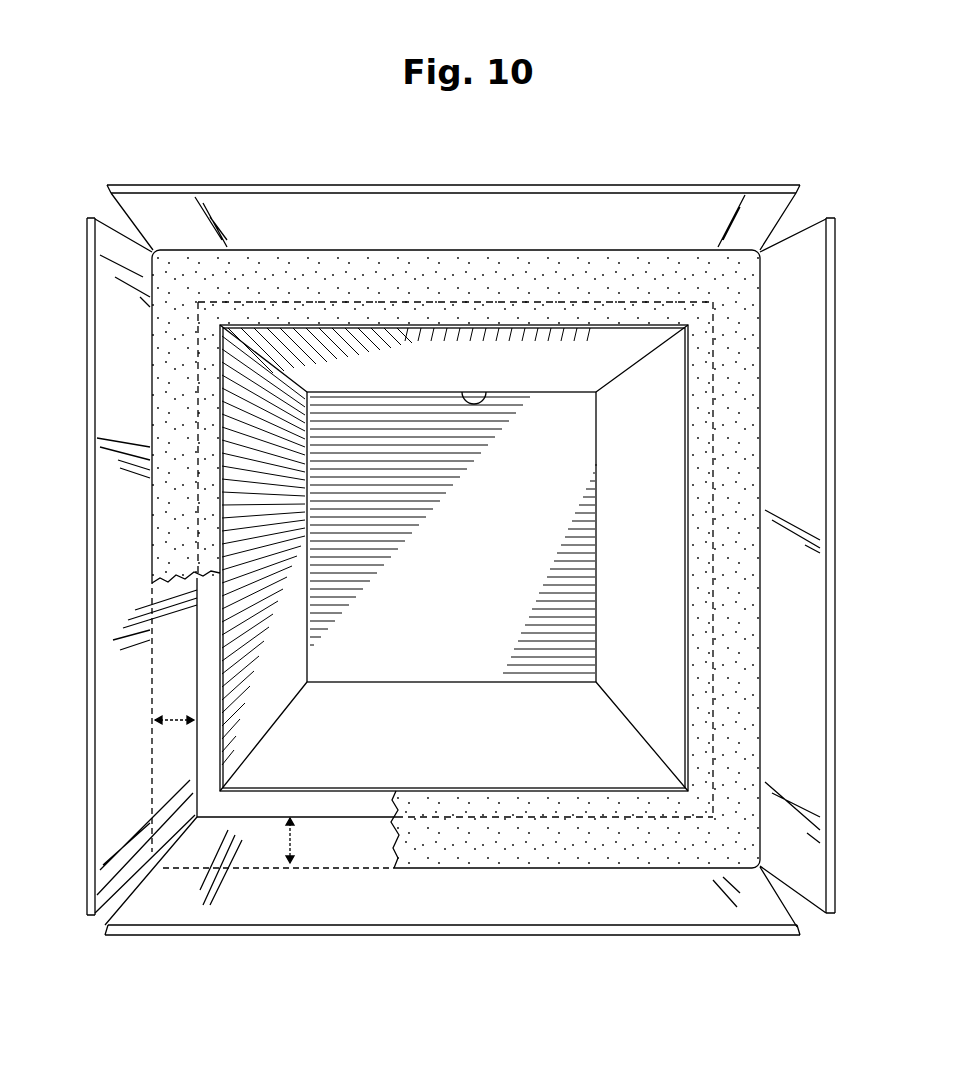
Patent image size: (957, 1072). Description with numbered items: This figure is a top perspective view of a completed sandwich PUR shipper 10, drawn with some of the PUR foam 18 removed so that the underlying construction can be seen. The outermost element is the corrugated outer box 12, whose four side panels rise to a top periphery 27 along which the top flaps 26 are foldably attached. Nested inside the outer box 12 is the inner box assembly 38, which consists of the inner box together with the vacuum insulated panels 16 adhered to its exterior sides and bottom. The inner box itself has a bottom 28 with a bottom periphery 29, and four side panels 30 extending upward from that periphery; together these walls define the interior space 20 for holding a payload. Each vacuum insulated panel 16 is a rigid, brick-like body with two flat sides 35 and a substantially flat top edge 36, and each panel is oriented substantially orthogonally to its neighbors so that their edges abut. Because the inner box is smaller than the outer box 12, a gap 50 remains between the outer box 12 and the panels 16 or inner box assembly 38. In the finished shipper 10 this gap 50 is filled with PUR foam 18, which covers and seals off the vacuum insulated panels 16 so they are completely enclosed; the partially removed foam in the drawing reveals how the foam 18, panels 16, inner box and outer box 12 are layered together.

The sandwich PUR shipper 10 is at (700, 178).
The outer box 12 is at (86, 463).
The vacuum insulated panels 16 is at (208, 762).
The PUR foam 18 is at (233, 280).
The interior space 20 is at (533, 416).
The top flaps 26 is at (152, 208).
The top periphery 27 is at (150, 523).
The bottom 28 is at (412, 408).
The bottom periphery 29 is at (487, 390).
The side panels 30 is at (347, 365).
The flat sides 35 is at (193, 693).
The top edge 36 is at (352, 805).
The inner box assembly 38 is at (397, 773).
The gap 50 is at (174, 720).